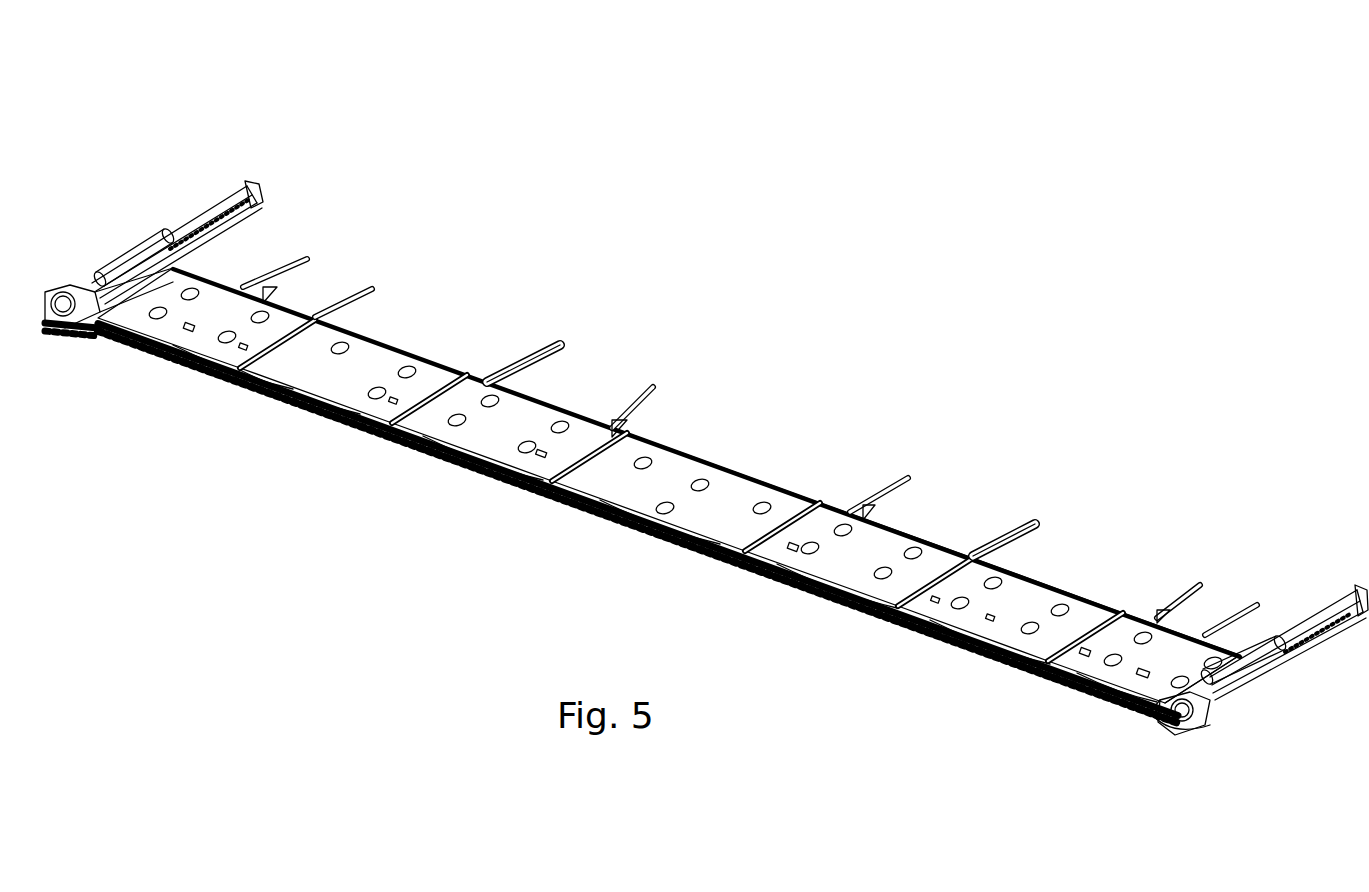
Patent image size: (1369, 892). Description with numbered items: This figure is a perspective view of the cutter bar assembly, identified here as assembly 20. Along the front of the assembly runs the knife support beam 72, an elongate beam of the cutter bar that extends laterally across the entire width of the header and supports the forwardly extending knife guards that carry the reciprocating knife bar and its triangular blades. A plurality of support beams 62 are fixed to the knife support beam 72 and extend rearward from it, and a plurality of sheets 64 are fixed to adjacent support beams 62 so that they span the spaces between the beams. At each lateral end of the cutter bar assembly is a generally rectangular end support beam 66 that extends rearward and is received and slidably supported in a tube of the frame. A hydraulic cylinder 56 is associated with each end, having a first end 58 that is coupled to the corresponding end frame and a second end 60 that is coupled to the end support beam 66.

The header 20 is at (540, 585).
The hydraulic cylinder 56 is at (153, 202).
The first end 58 is at (97, 267).
The second end 60 is at (231, 190).
The support beam 62 is at (312, 323).
The sheet 64 is at (217, 310).
The end support beam 66 is at (243, 235).
The knife support beam 72 is at (697, 547).